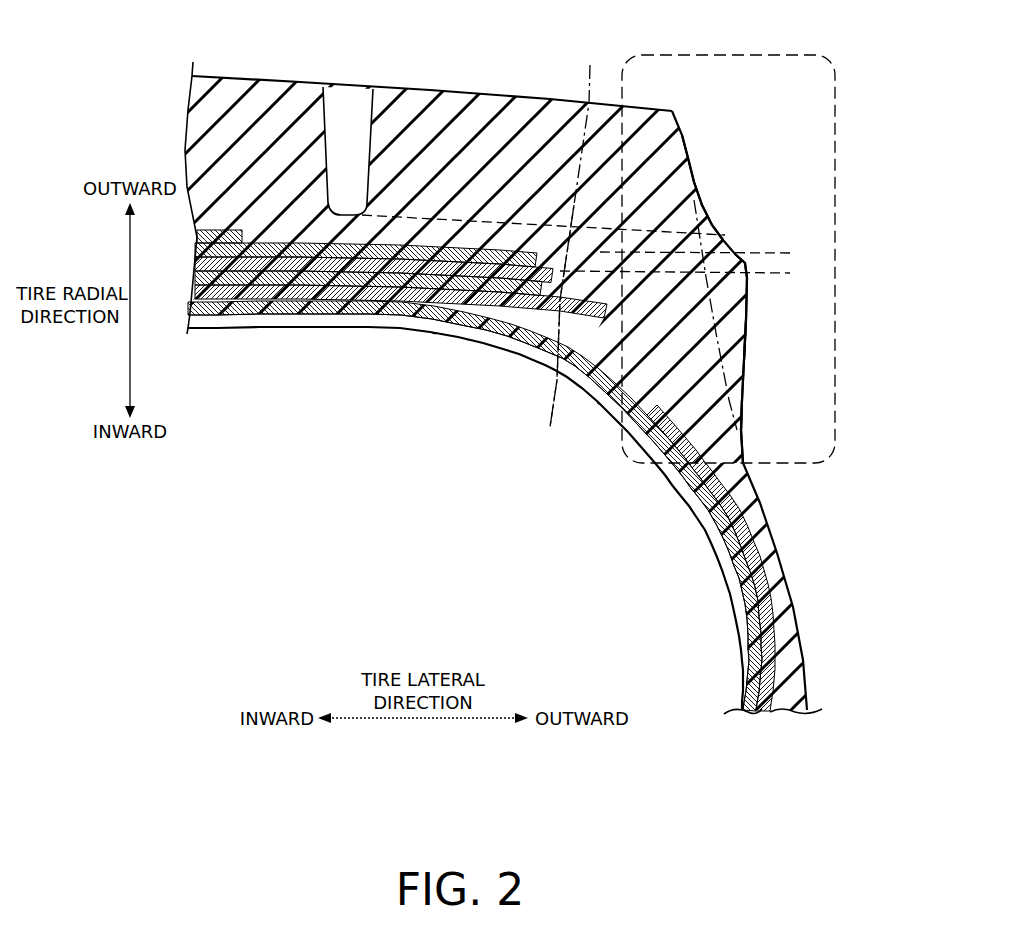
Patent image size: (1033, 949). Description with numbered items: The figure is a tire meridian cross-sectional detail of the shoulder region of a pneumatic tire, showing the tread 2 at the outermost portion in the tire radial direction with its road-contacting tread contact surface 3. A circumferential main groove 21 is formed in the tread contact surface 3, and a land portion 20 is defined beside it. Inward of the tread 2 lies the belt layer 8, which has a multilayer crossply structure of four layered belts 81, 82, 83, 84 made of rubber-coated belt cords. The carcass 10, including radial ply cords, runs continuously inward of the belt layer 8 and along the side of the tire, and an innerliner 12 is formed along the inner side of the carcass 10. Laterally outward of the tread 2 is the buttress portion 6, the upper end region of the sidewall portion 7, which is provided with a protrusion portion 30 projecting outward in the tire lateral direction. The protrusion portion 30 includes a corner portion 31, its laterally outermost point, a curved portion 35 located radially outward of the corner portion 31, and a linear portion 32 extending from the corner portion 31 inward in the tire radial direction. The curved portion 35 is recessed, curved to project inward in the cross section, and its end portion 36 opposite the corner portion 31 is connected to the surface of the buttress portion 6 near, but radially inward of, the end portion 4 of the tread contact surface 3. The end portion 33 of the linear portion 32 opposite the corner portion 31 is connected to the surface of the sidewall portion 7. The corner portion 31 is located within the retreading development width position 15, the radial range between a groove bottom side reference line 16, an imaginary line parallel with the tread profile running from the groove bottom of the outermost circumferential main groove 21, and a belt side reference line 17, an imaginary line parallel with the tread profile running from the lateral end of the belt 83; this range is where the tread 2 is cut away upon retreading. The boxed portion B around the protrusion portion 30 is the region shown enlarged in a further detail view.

The tread 2 is at (548, 68).
The tread contact surface 3 is at (493, 93).
The end portion of the tread contact surface 4 is at (671, 110).
The buttress portion 6 is at (772, 160).
The sidewall portion 7 is at (805, 632).
The belt layer 8 is at (401, 325).
The carcass 10 is at (775, 577).
The innerliner 12 is at (733, 602).
The retreading development width position 15 is at (790, 251).
The groove bottom side reference line 16 is at (576, 232).
The belt side reference line 17 is at (554, 329).
The land portion 20 is at (266, 95).
The circumferential main groove 21 is at (327, 140).
The protrusion portion 30 is at (766, 310).
The corner portion 31 is at (748, 260).
The linear portion 32 is at (748, 338).
The end portion of the linear portion 33 is at (742, 436).
The curved portion 35 is at (712, 232).
The end portion of the curved portion 36 is at (689, 165).
The belt 81 is at (226, 382).
The belt 82 is at (337, 315).
The belt 83 is at (285, 315).
The belt 84 is at (235, 315).
The portion B is at (848, 146).